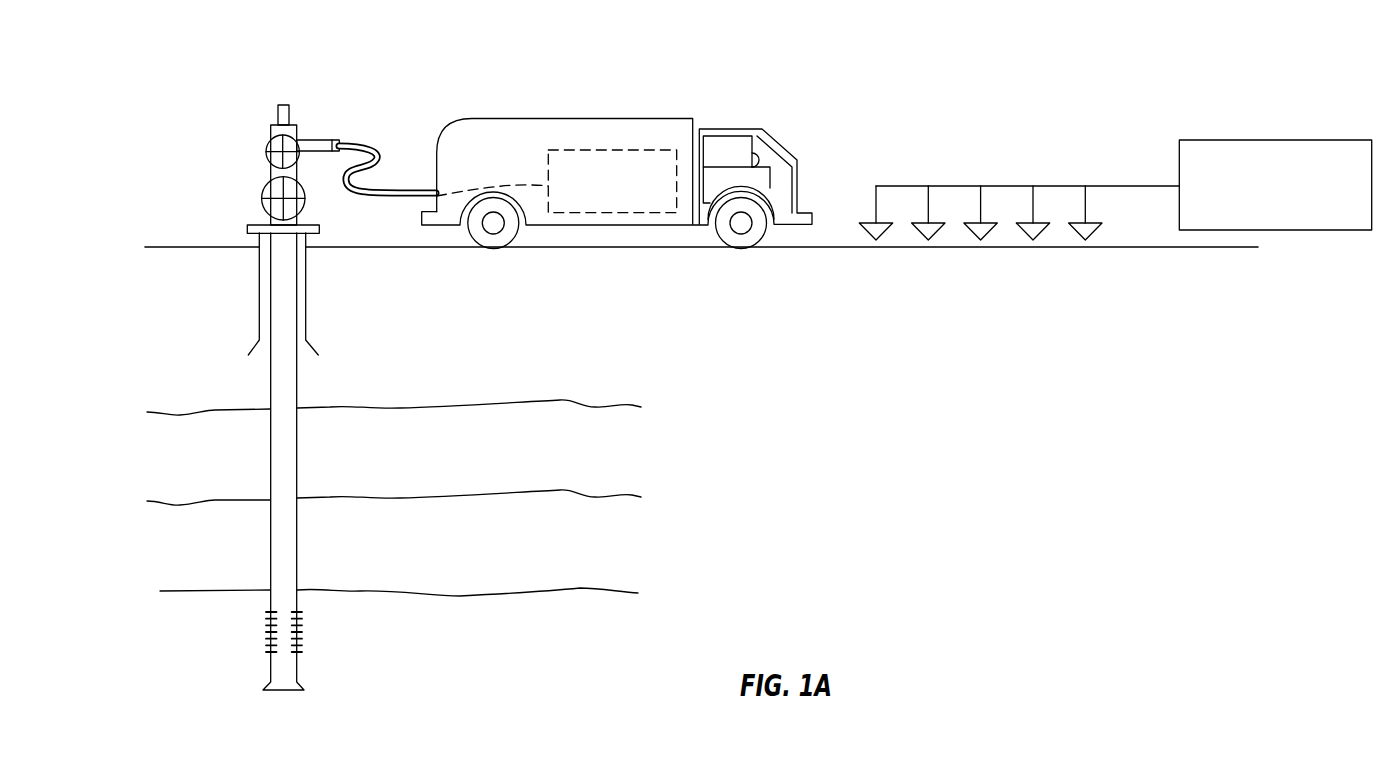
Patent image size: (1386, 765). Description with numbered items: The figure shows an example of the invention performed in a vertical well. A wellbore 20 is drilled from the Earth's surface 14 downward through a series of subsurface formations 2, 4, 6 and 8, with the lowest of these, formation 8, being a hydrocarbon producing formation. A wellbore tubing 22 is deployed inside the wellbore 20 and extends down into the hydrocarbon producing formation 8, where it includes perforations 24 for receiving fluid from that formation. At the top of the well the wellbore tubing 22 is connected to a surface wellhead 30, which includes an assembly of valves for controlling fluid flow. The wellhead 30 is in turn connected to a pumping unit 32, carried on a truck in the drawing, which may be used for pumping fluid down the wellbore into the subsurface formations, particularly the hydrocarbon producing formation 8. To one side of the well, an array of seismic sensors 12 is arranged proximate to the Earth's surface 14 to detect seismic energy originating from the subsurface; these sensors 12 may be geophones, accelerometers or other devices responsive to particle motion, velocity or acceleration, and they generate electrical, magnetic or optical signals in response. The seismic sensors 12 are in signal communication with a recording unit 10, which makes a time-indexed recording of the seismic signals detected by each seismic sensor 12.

The recording unit 10 is at (1276, 140).
The seismic sensors 12 is at (866, 234).
The Earth's surface 14 is at (777, 248).
The wellbore 20 is at (259, 300).
The wellbore tubing 22 is at (297, 470).
The perforations 24 is at (258, 632).
The surface wellhead 30 is at (264, 198).
The pumping unit 32 is at (577, 150).
The subsurface formation 2 is at (545, 374).
The subsurface formation 4 is at (545, 471).
The subsurface formation 6 is at (545, 564).
The hydrocarbon producing formation 8 is at (545, 659).